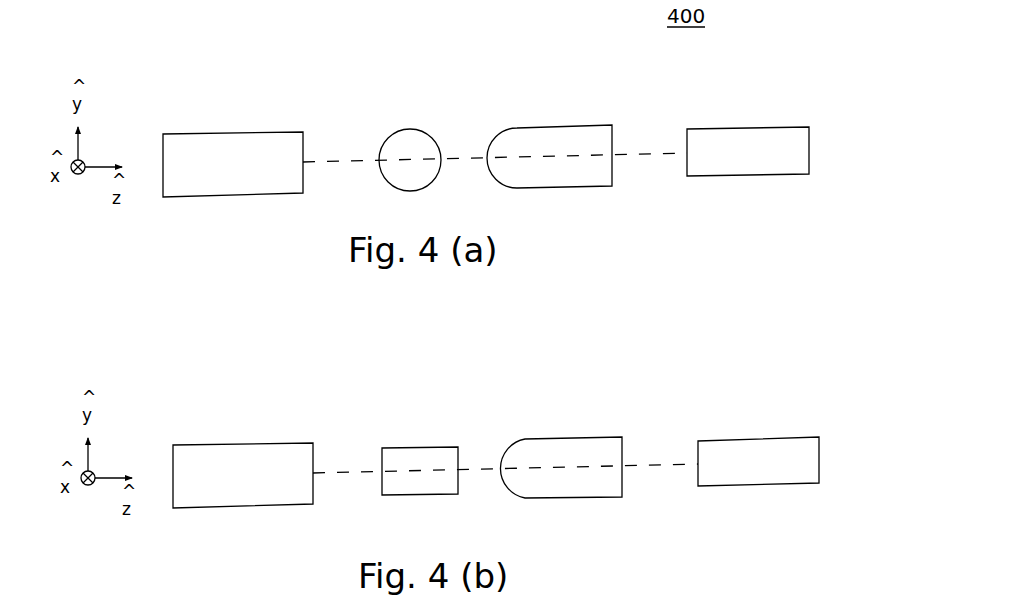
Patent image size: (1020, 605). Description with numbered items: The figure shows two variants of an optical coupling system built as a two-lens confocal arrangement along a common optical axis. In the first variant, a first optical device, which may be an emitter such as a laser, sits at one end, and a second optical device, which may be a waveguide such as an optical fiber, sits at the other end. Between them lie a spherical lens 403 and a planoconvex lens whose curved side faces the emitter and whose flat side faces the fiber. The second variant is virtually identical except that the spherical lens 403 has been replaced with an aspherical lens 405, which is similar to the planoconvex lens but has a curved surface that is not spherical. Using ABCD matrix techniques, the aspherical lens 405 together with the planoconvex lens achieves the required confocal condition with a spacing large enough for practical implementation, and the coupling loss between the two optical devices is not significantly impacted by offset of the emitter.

The spherical lens 403 is at (410, 129).
The aspherical lens 405 is at (418, 448).